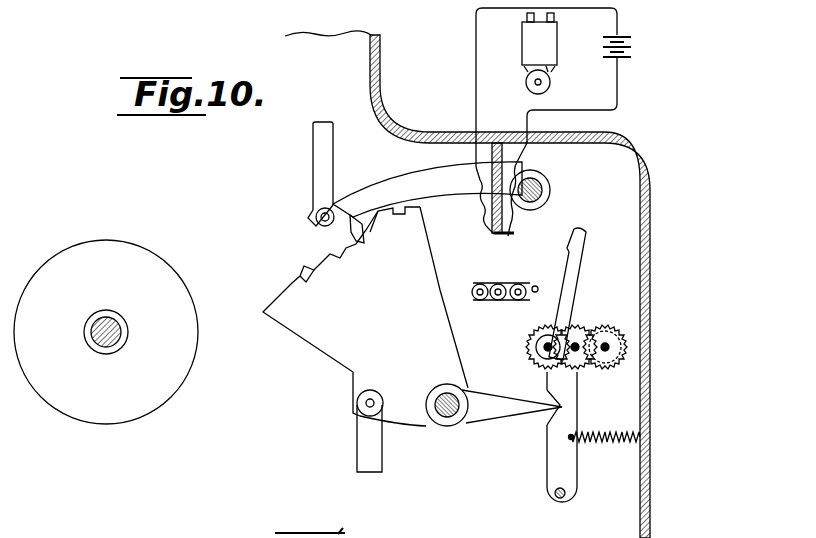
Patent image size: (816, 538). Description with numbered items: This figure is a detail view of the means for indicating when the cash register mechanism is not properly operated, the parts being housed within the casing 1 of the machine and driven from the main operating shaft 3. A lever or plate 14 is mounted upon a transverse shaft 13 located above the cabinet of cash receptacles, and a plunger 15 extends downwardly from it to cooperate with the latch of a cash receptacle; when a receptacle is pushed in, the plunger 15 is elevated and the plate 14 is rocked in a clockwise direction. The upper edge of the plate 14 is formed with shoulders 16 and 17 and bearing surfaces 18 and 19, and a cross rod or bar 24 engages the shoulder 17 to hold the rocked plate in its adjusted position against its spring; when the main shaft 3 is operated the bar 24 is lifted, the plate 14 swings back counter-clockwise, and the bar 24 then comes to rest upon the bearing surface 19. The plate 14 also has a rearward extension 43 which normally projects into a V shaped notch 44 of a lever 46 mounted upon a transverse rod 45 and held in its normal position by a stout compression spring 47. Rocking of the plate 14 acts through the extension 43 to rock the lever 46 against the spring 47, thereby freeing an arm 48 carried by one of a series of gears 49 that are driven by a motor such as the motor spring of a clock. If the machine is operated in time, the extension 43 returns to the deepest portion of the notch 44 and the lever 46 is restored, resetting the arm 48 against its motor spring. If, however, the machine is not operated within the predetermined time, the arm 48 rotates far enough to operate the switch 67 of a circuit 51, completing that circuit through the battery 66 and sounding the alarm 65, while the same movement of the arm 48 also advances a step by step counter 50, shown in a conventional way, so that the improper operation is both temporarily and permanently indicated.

The casing 1 is at (651, 275).
The main operating shaft 3 is at (108, 346).
The transverse shaft 13 is at (447, 427).
The lever 14 is at (330, 345).
The plunger 15 is at (357, 458).
The shoulder 16 is at (358, 250).
The shoulder 17 is at (306, 283).
The bearing surface 18 is at (408, 212).
The bearing surface 19 is at (375, 236).
The cross rod 24 is at (320, 222).
The rearward extension 43 is at (495, 430).
The V shaped notch 44 is at (558, 404).
The transverse rod 45 is at (558, 500).
The lever 46 is at (548, 462).
The compression spring 47 is at (603, 446).
The arm 48 is at (570, 299).
The gears 49 is at (581, 374).
The step by step counter 50 is at (494, 302).
The circuit 51 is at (487, 216).
The alarm 65 is at (548, 50).
The battery 66 is at (628, 48).
The switch 67 is at (530, 207).